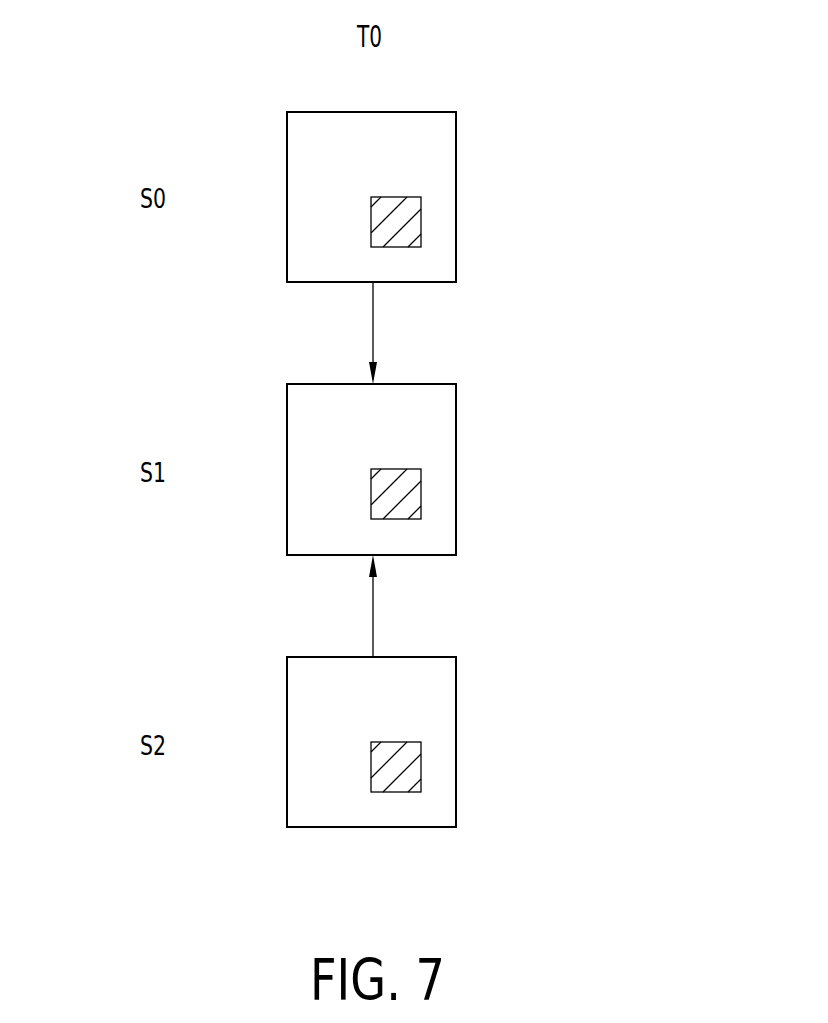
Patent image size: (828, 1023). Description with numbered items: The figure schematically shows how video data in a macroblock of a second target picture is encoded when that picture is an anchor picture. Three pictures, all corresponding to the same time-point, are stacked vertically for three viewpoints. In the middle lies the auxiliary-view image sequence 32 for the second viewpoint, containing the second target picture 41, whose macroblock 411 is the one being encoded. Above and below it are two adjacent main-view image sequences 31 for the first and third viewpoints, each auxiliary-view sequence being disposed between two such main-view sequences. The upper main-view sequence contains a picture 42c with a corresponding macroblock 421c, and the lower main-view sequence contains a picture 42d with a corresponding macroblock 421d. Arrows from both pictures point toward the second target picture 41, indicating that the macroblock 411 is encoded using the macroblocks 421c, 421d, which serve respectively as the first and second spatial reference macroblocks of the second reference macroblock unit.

The main-view image sequence 31 is at (270, 127).
The auxiliary-view image sequence 32 is at (270, 400).
The second target picture 41 is at (456, 430).
The macroblock 411 is at (421, 491).
The picture 42c is at (456, 153).
The macroblock 421c is at (421, 219).
The picture 42d is at (456, 698).
The macroblock 421d is at (421, 762).